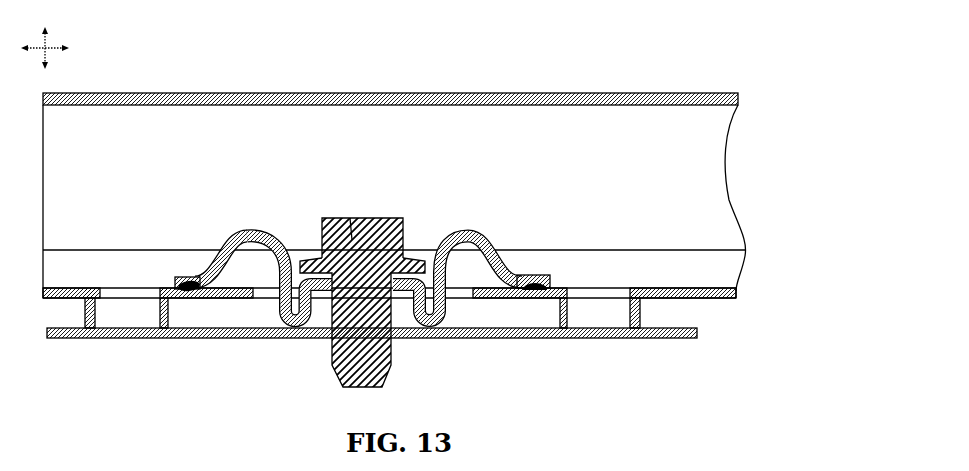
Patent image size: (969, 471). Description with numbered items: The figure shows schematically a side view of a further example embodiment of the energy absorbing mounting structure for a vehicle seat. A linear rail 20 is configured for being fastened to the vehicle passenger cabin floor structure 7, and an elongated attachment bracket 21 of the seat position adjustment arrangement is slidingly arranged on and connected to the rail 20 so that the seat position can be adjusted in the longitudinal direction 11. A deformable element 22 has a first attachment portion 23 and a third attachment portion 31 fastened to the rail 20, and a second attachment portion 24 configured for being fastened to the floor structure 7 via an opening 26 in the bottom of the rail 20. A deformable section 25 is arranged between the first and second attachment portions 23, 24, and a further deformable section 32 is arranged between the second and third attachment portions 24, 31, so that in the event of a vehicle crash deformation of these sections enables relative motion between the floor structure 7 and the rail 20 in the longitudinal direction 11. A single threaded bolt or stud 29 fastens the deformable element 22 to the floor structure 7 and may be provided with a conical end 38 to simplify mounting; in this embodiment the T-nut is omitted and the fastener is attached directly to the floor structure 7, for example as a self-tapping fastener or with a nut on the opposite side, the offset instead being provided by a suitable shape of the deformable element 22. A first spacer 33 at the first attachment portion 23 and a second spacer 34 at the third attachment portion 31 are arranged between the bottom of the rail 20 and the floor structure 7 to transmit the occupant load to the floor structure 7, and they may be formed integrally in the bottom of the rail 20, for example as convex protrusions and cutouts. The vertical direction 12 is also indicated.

The vehicle passenger cabin floor structure 7 is at (68, 339).
The longitudinal direction 11 is at (59, 37).
The second direction 12 is at (56, 37).
The rail 20 is at (518, 291).
The attachment bracket 21 is at (632, 93).
The deformable element 22 is at (256, 182).
The first attachment portion 23 is at (186, 277).
The second attachment portion 24 is at (408, 288).
The deformable section 25 is at (245, 228).
The opening 26 is at (268, 295).
The threaded bolt or stud 29 is at (352, 238).
The third attachment portion 31 is at (542, 275).
The further deformable section 32 is at (471, 212).
The first spacer 33 is at (96, 309).
The second spacer 34 is at (558, 312).
The conical end 38 is at (351, 218).